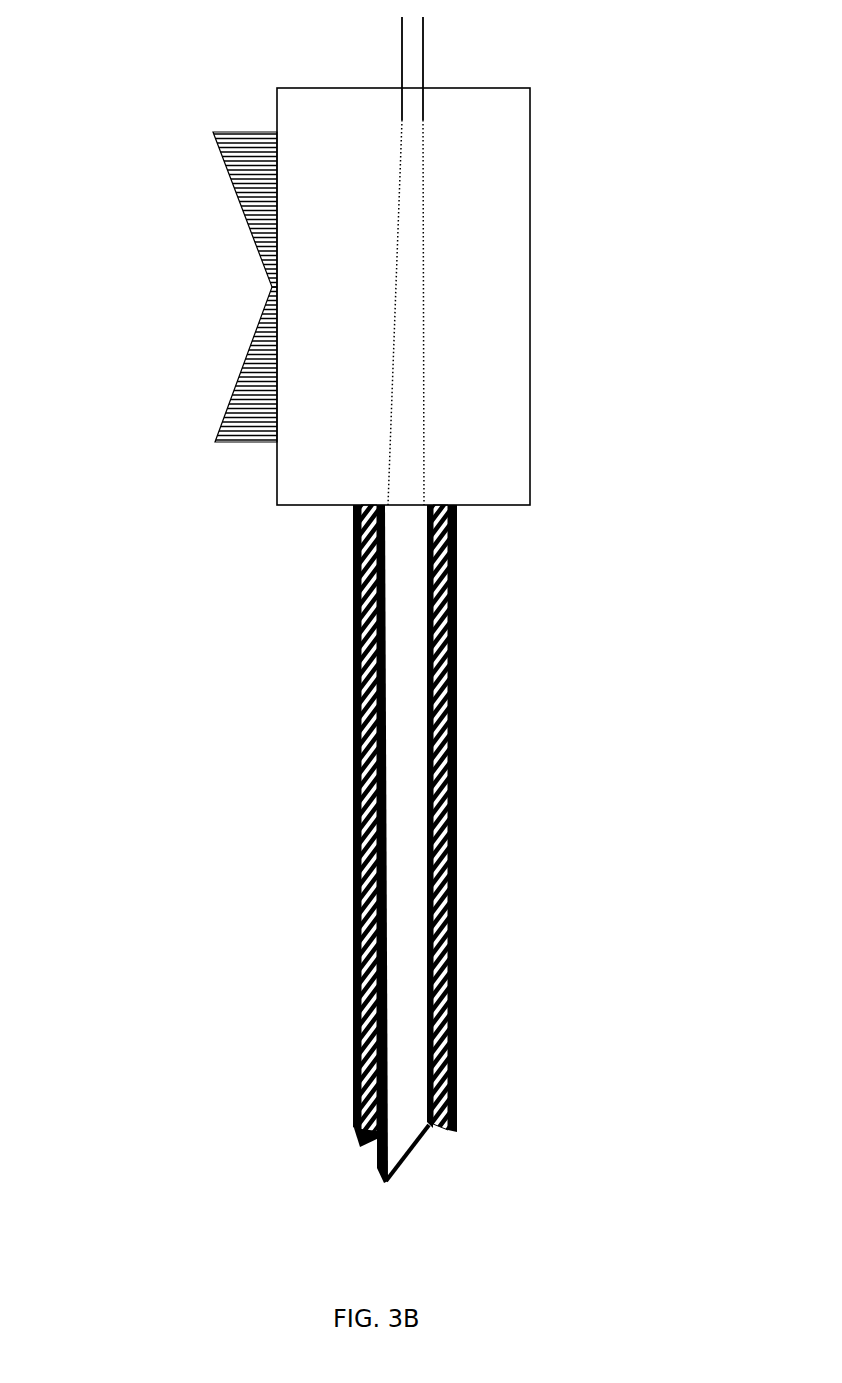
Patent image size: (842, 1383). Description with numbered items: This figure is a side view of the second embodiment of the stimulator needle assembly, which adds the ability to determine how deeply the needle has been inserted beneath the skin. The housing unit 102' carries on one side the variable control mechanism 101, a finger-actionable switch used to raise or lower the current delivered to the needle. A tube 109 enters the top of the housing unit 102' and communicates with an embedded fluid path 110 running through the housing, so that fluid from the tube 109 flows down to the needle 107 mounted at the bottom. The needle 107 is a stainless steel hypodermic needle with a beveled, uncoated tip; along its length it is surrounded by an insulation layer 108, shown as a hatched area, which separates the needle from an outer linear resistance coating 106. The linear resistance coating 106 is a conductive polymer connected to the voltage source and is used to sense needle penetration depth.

The variable control mechanism 101 is at (235, 196).
The housing unit 102' is at (528, 296).
The linear resistance coating 106 is at (355, 832).
The needle 107 is at (405, 1169).
The insulation layer 108 is at (360, 1146).
The tube 109 is at (423, 27).
The embedded fluid path 110 is at (404, 297).